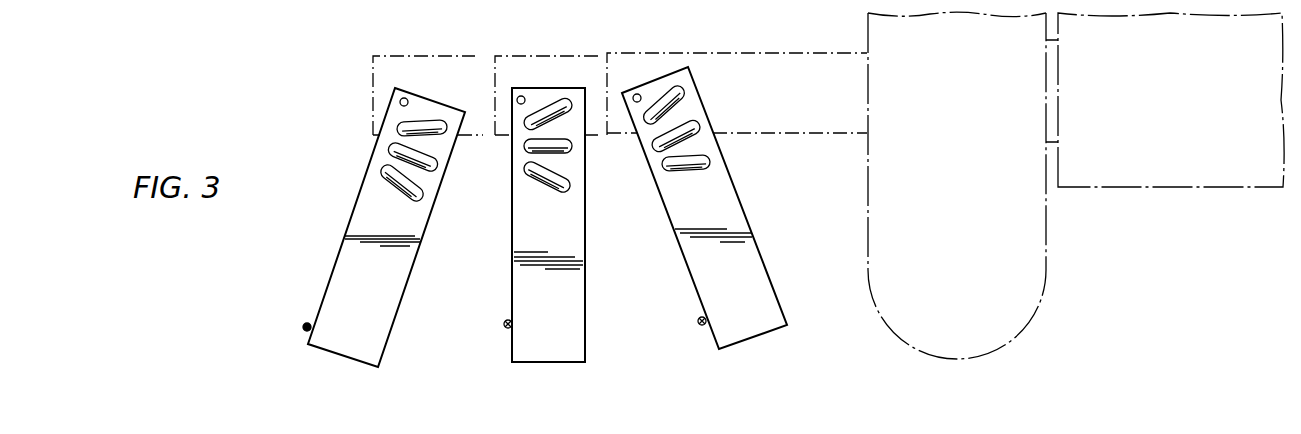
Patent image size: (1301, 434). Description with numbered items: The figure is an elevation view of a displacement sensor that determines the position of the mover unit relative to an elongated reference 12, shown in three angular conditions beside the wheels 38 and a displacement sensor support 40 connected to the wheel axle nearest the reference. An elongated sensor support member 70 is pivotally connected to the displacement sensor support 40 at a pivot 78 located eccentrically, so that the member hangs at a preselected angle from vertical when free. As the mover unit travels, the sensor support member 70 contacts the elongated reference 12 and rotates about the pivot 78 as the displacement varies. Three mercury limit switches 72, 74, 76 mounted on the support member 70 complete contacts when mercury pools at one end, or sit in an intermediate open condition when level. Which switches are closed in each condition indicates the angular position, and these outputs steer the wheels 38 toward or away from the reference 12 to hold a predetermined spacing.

The elongated reference 12 is at (303, 326).
The wheels 38 is at (1035, 259).
The displacement sensor support 40 is at (764, 60).
The elongated sensor support member 70 is at (352, 277).
The switch 72 is at (390, 190).
The switch 74 is at (388, 155).
The switch 76 is at (397, 129).
The pivot 78 is at (406, 98).